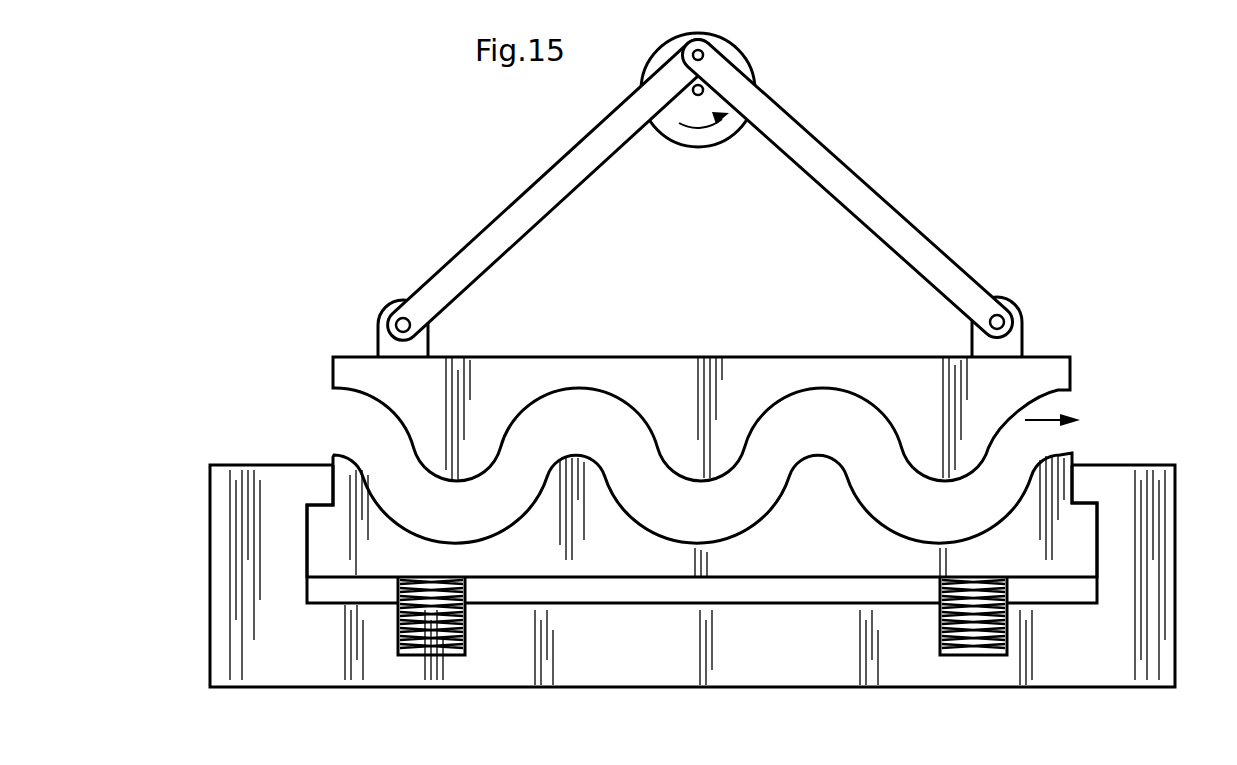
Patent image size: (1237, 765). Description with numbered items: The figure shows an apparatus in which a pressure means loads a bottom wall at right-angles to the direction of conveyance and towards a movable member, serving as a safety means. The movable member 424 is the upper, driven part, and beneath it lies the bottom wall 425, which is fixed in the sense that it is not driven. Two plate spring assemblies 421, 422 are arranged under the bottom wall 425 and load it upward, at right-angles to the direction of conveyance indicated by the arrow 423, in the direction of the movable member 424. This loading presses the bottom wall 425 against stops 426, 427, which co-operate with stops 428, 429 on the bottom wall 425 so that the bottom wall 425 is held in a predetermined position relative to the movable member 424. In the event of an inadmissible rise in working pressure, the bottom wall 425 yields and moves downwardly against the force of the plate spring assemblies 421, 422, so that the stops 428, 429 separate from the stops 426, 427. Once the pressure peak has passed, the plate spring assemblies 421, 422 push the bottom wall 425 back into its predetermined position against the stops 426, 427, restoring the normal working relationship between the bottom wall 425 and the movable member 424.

The plate spring assembly 421 is at (432, 645).
The plate spring assembly 422 is at (975, 645).
The direction of conveyance arrow 423 is at (1040, 417).
The movable member 424 is at (677, 372).
The bottom wall 425 is at (776, 560).
The stop 426 is at (317, 502).
The stop 427 is at (1082, 498).
The stop on the bottom wall 428 is at (333, 543).
The stop on the bottom wall 429 is at (1085, 528).